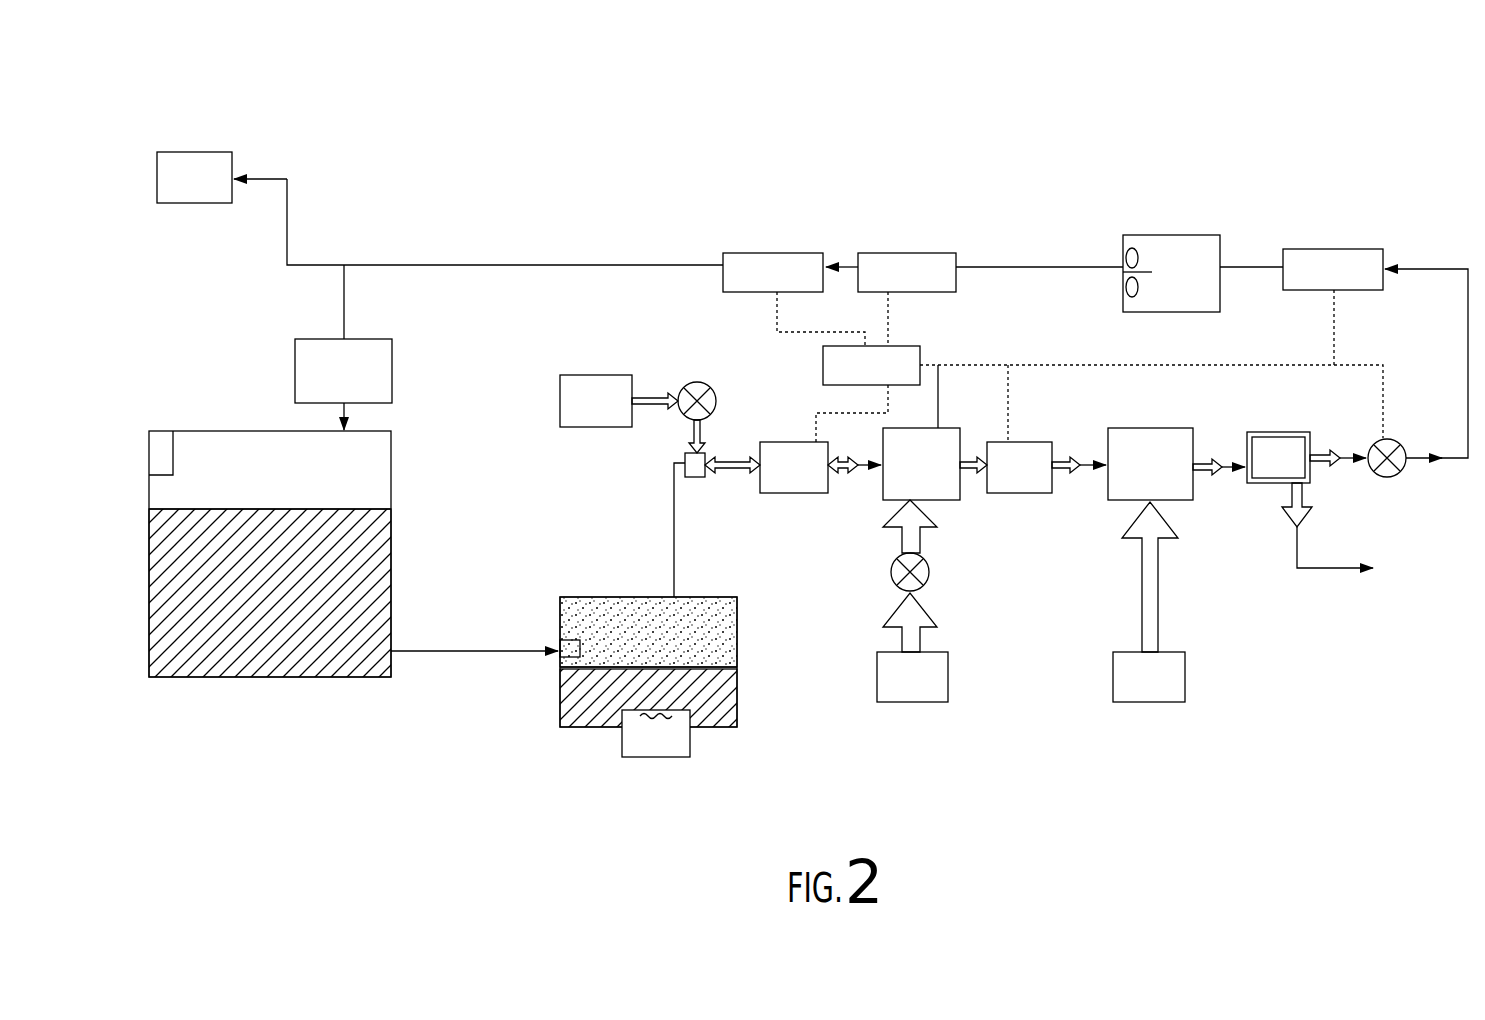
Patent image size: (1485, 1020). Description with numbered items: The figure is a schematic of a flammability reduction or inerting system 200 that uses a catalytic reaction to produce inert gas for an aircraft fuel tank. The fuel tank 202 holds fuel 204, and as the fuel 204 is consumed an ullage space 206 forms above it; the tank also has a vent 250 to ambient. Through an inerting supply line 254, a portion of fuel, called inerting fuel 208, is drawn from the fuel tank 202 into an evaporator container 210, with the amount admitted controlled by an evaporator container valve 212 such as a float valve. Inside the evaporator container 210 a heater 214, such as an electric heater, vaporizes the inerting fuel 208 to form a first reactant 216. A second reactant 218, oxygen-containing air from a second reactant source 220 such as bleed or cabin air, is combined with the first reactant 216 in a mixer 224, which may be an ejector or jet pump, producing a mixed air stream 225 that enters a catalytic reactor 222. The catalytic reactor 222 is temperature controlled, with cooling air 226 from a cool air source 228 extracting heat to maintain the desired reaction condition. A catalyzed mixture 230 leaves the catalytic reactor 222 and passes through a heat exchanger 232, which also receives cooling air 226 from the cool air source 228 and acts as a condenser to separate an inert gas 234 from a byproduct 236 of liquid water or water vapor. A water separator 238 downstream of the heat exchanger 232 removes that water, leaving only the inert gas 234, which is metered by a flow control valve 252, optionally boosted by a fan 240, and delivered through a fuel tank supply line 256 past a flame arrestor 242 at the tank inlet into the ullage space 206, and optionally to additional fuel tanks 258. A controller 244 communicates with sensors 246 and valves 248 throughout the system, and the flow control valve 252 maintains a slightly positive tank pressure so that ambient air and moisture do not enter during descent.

The inerting system 200 is at (375, 160).
The fuel tank 202 is at (246, 431).
The fuel 204 is at (258, 652).
The ullage space 206 is at (357, 484).
The inerting fuel 208 is at (720, 700).
The evaporator container 210 is at (587, 597).
The evaporator container valve 212 is at (560, 655).
The heater 214 is at (690, 735).
The first reactant 216 is at (720, 627).
The second reactant 218 is at (656, 396).
The second reactant source 220 is at (575, 416).
The catalytic reactor 222 is at (900, 479).
The mixer 224 is at (700, 477).
The mixed air stream 225 is at (841, 476).
The cooling air 226 is at (921, 537).
The cool air source 228 is at (891, 692).
The catalyzed mixture 230 is at (967, 460).
The heat exchanger 232 is at (1129, 479).
The inert gas 234 is at (1332, 452).
The byproduct 236 is at (1288, 500).
The water separator 238 is at (1257, 473).
The fan 240 is at (1159, 287).
The flame arrestor 242 is at (323, 386).
The controller 244 is at (851, 381).
The sensors 246 is at (773, 482).
The valves 248 is at (693, 385).
The vent 250 is at (160, 442).
The flow control valve 252 is at (1383, 480).
The inerting supply line 254 is at (448, 651).
The fuel tank supply line 256 is at (489, 265).
The additional fuel tanks 258 is at (173, 193).